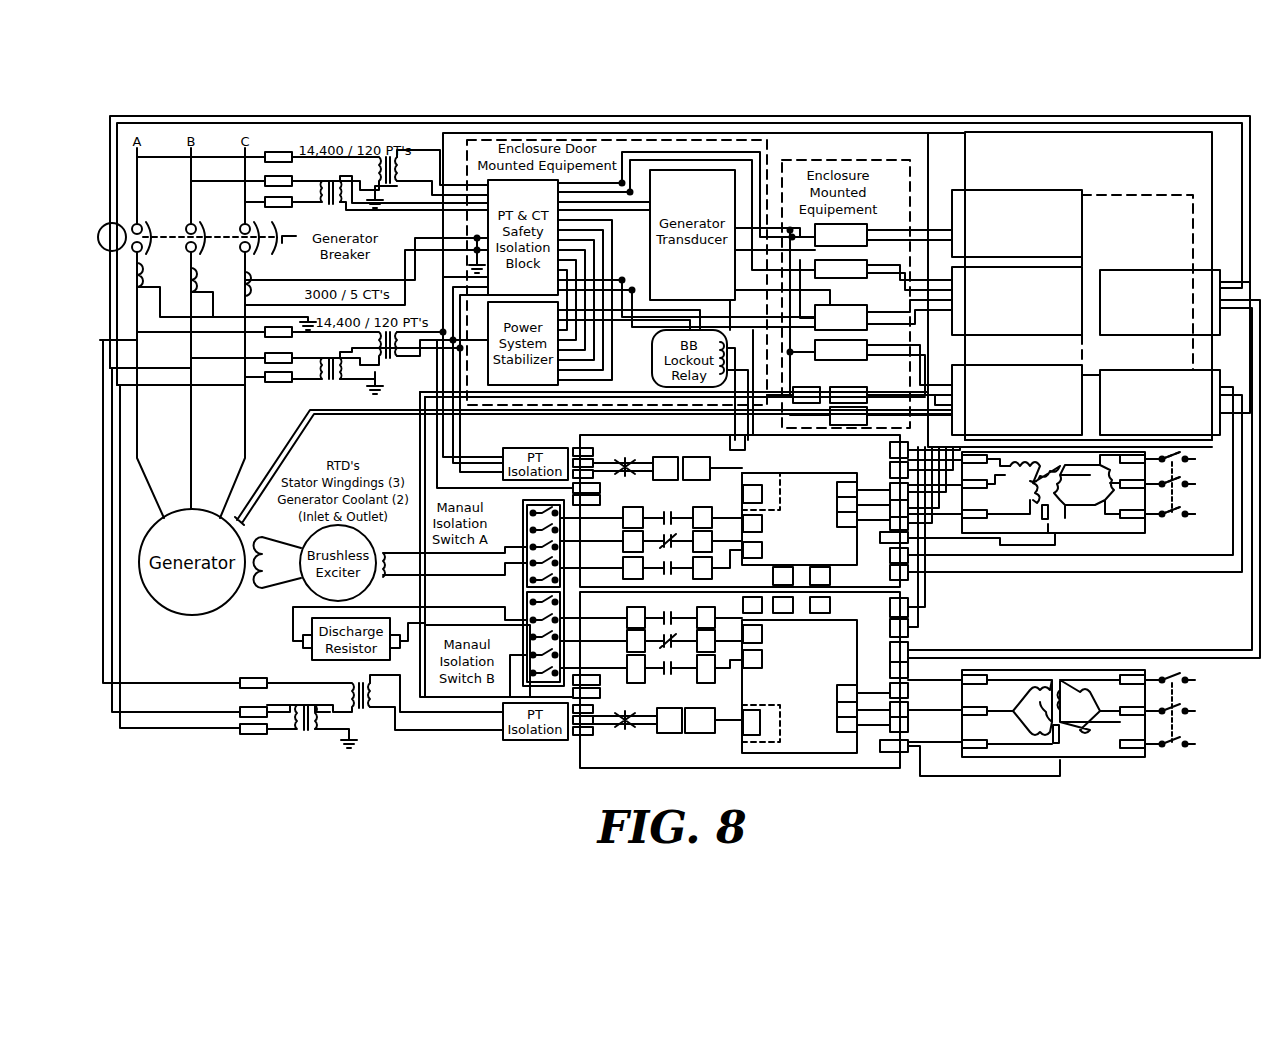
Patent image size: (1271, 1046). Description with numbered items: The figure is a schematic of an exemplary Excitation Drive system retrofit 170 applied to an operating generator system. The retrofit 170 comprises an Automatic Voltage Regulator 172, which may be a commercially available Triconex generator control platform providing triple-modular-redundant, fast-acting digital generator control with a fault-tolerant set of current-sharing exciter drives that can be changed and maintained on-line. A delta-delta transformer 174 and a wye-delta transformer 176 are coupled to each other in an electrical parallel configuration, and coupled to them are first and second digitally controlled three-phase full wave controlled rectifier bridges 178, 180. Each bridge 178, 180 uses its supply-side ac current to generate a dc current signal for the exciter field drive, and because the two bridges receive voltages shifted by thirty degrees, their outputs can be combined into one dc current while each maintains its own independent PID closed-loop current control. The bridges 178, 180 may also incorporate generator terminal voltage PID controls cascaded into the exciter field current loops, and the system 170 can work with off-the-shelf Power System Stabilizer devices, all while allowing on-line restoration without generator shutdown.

The Excitation Drive system retrofit 170 is at (411, 756).
The Automatic Voltage Regulator 172 is at (1150, 132).
The delta-delta transformer 174 is at (1145, 757).
The wye-delta transformer 176 is at (1145, 533).
The first digitally controlled three-phase full wave controlled rectifier bridge 178 is at (580, 768).
The second digitally controlled three-phase full wave controlled rectifier bridge 180 is at (580, 440).